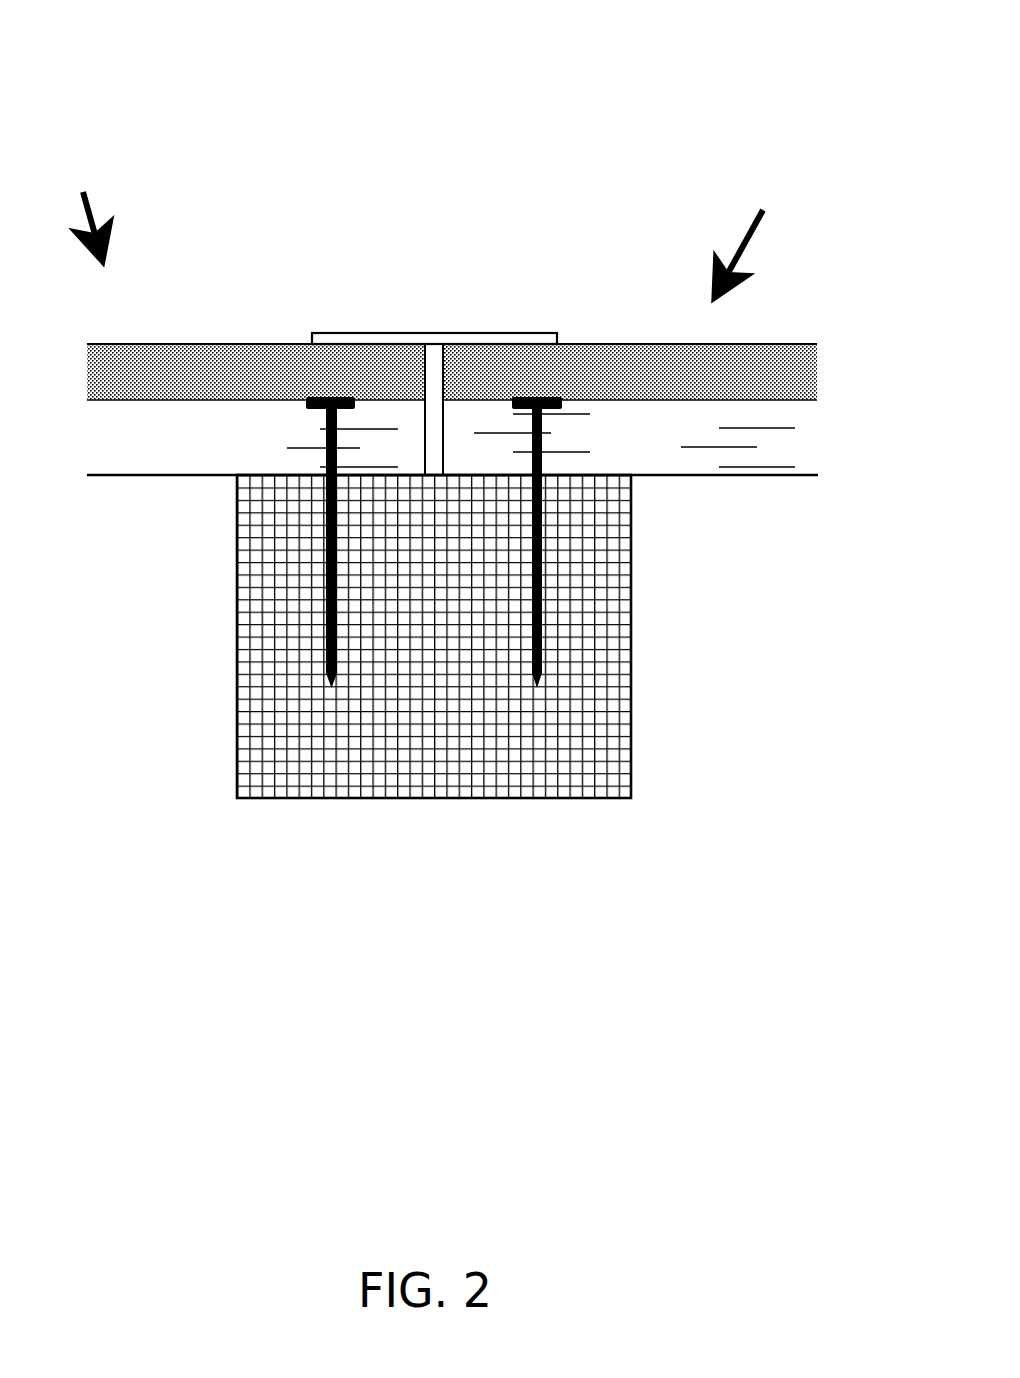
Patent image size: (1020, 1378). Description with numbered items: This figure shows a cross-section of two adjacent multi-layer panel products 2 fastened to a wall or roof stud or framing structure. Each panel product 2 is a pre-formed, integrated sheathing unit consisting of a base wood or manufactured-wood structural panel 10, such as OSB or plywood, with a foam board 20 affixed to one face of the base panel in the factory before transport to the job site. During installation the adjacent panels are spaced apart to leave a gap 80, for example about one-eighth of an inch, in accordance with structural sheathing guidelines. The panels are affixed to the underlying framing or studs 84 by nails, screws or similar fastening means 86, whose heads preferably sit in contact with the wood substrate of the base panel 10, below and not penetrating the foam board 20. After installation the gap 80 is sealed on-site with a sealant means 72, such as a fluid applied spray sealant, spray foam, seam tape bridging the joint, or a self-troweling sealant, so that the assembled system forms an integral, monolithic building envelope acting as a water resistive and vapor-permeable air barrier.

The multi-layer panel product 2 is at (424, 214).
The base structural panel 10 is at (228, 452).
The foam board 20 is at (583, 362).
The sealant means 72 is at (475, 333).
The gap 80 is at (431, 390).
The framing 84 is at (253, 757).
The fastening means 86 is at (338, 566).